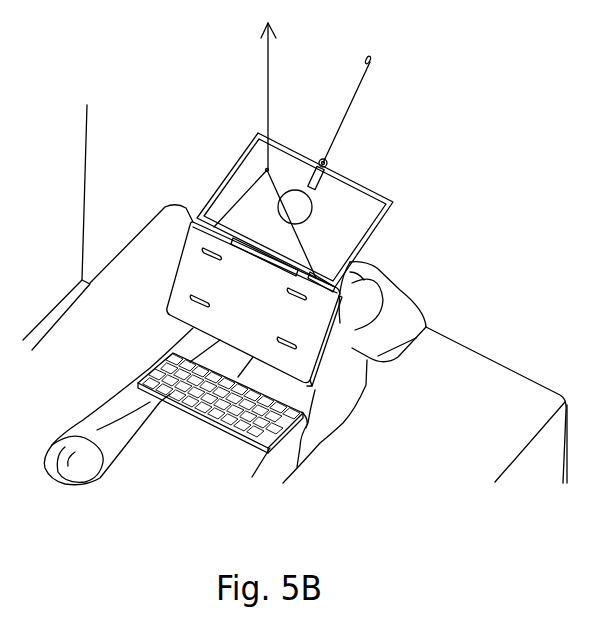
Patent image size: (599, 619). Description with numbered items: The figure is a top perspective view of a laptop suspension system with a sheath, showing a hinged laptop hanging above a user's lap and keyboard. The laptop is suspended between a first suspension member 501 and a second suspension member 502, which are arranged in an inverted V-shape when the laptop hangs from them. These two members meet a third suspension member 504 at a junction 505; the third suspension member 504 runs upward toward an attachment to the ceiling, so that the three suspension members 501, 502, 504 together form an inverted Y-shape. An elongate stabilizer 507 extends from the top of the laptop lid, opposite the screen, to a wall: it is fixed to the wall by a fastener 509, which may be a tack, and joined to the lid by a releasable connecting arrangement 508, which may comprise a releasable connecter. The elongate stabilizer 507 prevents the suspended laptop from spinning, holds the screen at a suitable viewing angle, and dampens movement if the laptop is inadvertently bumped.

The first suspension member 501 is at (303, 236).
The second suspension member 502 is at (238, 193).
The third suspension member 504 is at (265, 103).
The junction 505 is at (260, 167).
The elongate stabilizer 507 is at (345, 128).
The releasable connecting arrangement 508 is at (317, 177).
The fastener 509 is at (417, 48).